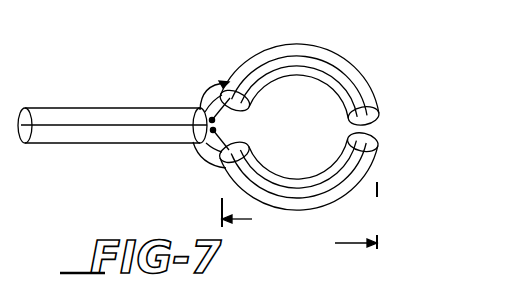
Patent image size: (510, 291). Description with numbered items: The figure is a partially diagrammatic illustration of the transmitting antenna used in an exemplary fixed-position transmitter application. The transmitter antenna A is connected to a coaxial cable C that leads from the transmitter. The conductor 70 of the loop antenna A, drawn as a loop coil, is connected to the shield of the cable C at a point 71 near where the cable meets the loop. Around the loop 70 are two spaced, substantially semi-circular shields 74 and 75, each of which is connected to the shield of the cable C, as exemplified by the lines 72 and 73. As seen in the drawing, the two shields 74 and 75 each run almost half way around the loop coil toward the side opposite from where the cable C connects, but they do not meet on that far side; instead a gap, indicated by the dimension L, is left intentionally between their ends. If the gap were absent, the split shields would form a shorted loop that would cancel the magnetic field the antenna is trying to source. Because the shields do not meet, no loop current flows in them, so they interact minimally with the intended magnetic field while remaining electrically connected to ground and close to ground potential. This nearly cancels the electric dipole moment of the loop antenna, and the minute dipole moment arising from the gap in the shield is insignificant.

The coaxial cable C is at (93, 108).
The transmitter antenna A is at (311, 120).
The conductor 70 is at (215, 130).
The point 71 is at (212, 118).
The line 72 is at (196, 100).
The line 73 is at (190, 158).
The semi-circular shield 74 is at (368, 88).
The semi-circular shield 75 is at (357, 184).
The length dimension L is at (310, 242).